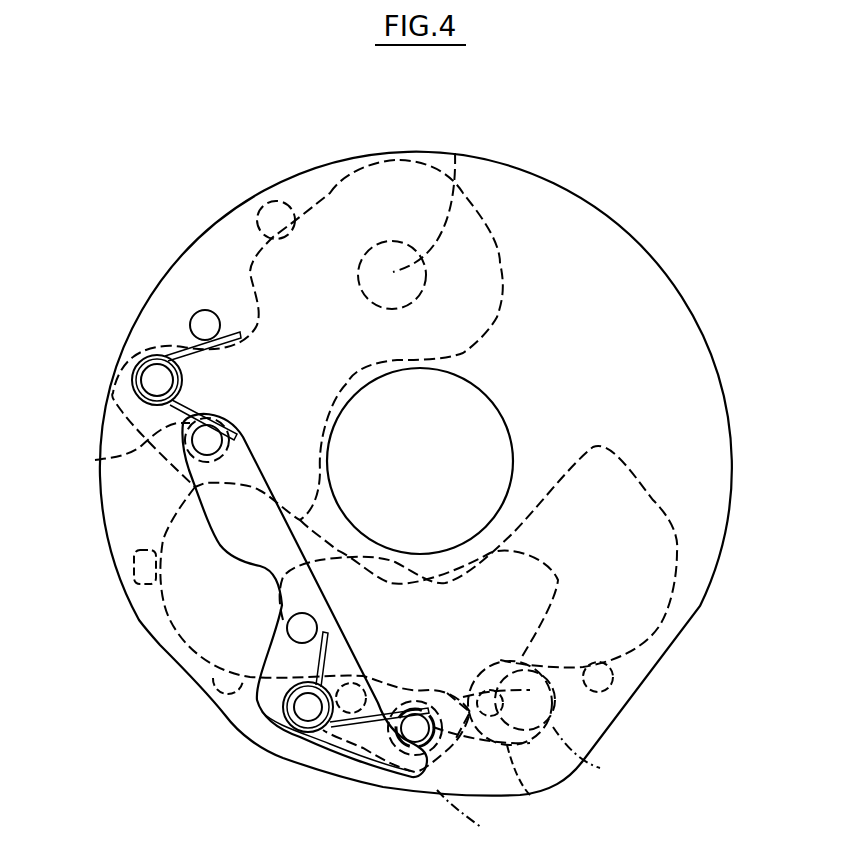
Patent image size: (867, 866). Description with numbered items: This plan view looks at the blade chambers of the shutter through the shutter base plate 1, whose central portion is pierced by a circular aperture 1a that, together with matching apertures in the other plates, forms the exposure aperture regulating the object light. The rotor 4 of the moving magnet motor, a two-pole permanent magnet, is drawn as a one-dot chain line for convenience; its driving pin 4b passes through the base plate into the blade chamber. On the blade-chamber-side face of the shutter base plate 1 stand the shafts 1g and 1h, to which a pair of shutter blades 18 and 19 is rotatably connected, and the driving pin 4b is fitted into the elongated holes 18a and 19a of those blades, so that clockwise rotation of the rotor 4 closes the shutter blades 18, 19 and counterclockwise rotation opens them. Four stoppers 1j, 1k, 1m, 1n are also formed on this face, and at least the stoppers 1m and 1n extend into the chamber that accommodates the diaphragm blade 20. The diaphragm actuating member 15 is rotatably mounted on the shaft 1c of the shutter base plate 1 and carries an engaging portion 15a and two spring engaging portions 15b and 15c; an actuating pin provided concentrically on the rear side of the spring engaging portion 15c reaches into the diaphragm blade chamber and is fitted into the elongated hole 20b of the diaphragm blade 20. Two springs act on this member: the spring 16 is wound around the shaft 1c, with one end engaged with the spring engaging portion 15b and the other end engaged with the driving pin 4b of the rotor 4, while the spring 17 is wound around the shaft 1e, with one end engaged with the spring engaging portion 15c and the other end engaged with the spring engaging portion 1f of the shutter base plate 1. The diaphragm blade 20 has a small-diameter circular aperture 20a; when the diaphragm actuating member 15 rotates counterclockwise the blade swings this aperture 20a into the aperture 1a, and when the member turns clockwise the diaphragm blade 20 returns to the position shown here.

The shutter base plate 1 is at (663, 342).
The circular aperture 1a is at (495, 416).
The shaft 1c is at (295, 708).
The shaft 1e is at (152, 380).
The spring engaging portion 1f is at (205, 318).
The shaft 1g is at (528, 793).
The shaft 1h is at (335, 760).
The stopper 1j is at (213, 705).
The stopper 1k is at (600, 693).
The stopper 1m is at (275, 203).
The stopper 1n is at (133, 563).
The rotor 4 is at (600, 768).
The driving pin 4b is at (480, 821).
The diaphragm actuating member 15 is at (267, 565).
The engaging portion 15a is at (378, 777).
The spring engaging portion 15b is at (298, 630).
The spring engaging portion 15c is at (207, 440).
The spring 16 is at (309, 745).
The spring 17 is at (172, 360).
The shutter blade 18 is at (175, 598).
The elongated hole 18a is at (470, 693).
The shutter blade 19 is at (660, 556).
The elongated hole 19a is at (390, 690).
The diaphragm blade 20 is at (395, 185).
The small-diameter circular aperture 20a is at (460, 143).
The elongated hole 20b is at (97, 458).